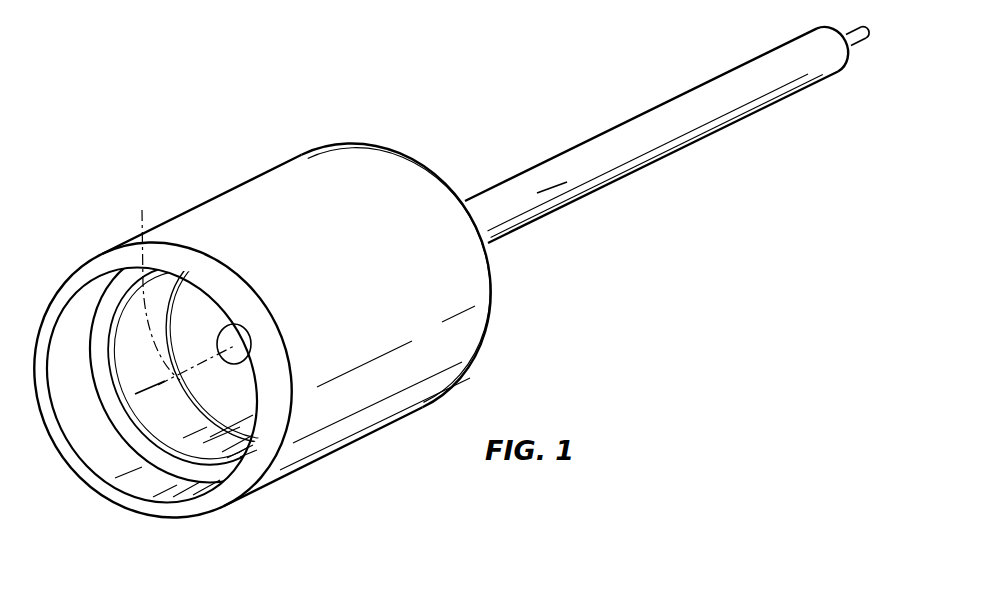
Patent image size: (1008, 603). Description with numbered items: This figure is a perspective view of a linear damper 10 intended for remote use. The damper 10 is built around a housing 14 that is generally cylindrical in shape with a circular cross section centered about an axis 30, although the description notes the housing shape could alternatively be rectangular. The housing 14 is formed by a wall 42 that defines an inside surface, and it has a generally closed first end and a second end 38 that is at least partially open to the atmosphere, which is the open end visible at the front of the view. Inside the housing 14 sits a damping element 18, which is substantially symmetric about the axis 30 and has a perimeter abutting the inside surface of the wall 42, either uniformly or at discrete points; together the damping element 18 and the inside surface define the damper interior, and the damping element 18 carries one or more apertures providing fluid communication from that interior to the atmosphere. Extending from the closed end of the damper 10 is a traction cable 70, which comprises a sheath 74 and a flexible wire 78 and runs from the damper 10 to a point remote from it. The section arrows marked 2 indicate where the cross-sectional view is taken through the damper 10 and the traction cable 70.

The linear damper 10 is at (213, 110).
The housing 14 is at (470, 326).
The damping element 18 is at (113, 302).
The axis 30 is at (191, 285).
The second end 38 is at (78, 505).
The wall 42 is at (390, 143).
The traction cable 70 is at (664, 70).
The sheath 74 is at (760, 110).
The flexible wire 78 is at (857, 40).
The section line 2 is at (160, 392).